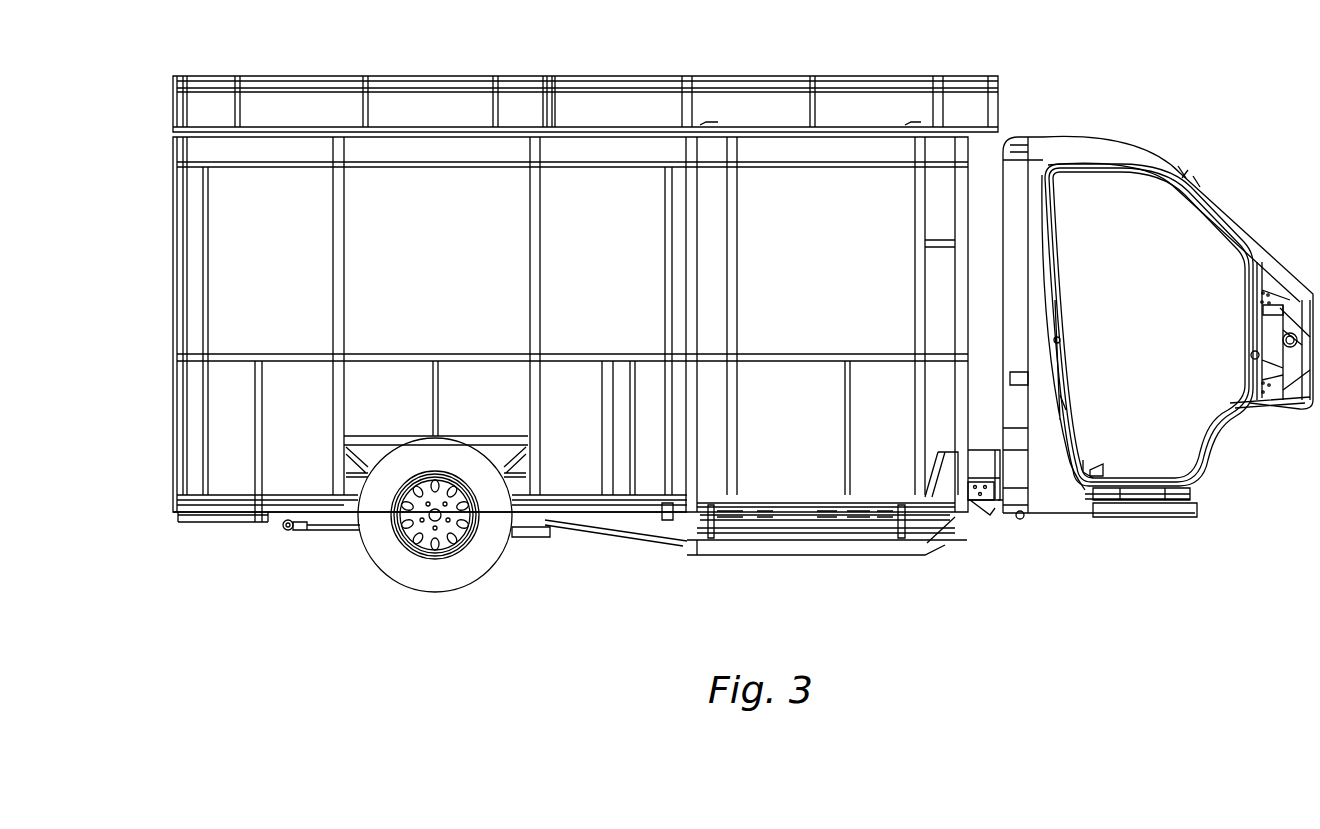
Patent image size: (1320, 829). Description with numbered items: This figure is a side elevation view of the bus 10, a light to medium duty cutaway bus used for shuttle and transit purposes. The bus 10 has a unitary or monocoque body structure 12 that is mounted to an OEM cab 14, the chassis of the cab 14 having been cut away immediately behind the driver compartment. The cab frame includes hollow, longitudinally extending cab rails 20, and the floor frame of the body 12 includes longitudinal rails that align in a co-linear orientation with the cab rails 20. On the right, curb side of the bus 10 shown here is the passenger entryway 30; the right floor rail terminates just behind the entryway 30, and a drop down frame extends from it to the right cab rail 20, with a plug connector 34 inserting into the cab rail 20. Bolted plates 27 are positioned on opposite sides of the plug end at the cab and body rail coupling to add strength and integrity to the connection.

The bus 10 is at (1117, 76).
The body structure 12 is at (178, 228).
The OEM cab 14 is at (1125, 152).
The cab rail 20 is at (990, 458).
The plates 27 is at (978, 498).
The entryway 30 is at (715, 567).
The plug connector 34 is at (942, 475).